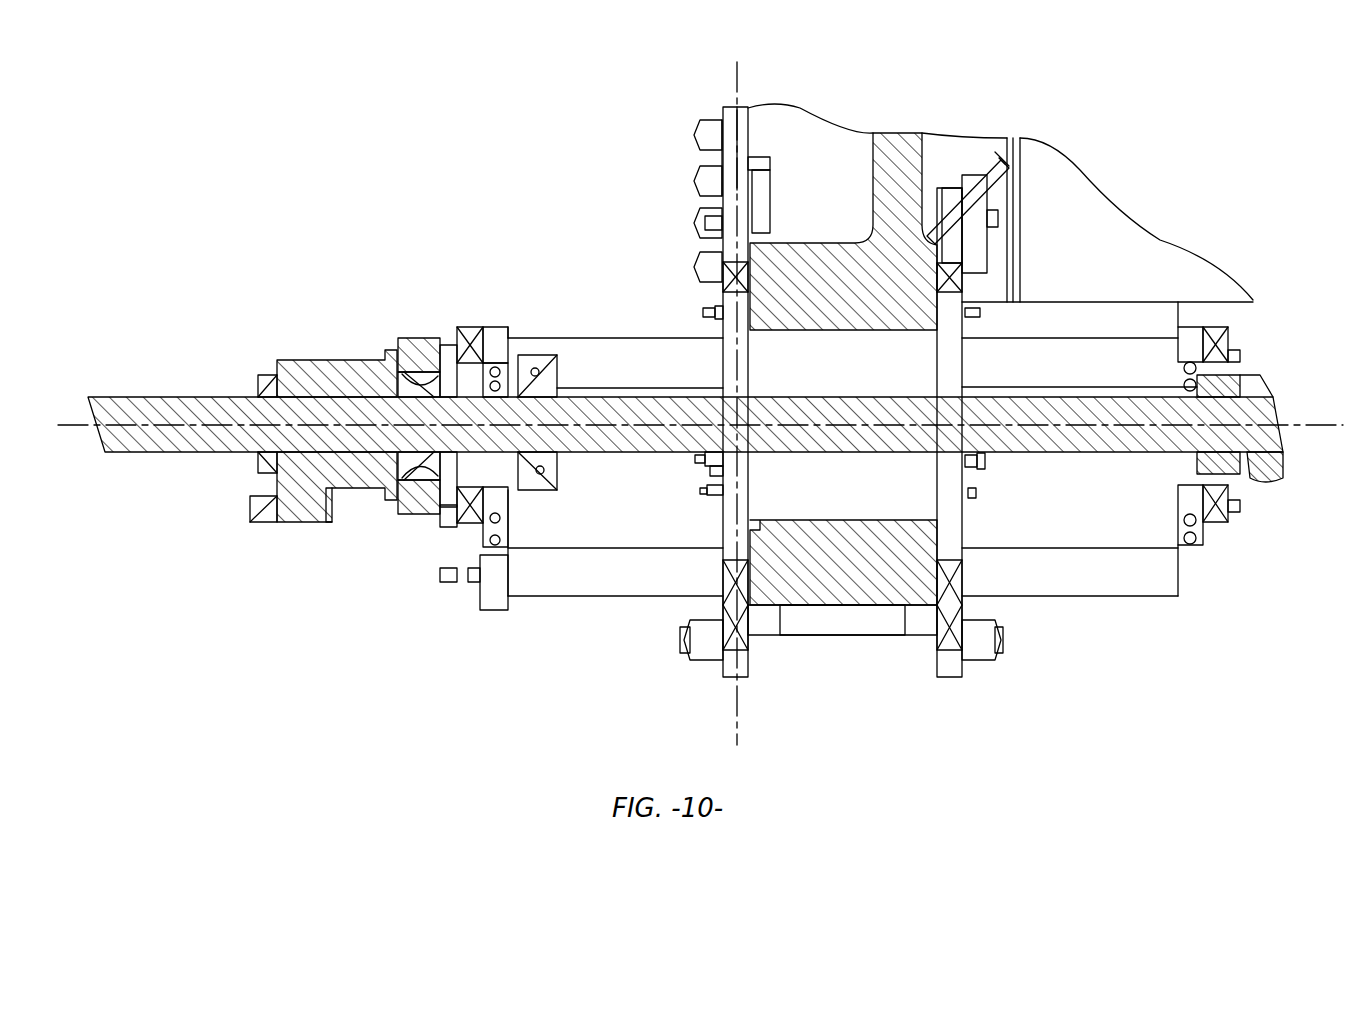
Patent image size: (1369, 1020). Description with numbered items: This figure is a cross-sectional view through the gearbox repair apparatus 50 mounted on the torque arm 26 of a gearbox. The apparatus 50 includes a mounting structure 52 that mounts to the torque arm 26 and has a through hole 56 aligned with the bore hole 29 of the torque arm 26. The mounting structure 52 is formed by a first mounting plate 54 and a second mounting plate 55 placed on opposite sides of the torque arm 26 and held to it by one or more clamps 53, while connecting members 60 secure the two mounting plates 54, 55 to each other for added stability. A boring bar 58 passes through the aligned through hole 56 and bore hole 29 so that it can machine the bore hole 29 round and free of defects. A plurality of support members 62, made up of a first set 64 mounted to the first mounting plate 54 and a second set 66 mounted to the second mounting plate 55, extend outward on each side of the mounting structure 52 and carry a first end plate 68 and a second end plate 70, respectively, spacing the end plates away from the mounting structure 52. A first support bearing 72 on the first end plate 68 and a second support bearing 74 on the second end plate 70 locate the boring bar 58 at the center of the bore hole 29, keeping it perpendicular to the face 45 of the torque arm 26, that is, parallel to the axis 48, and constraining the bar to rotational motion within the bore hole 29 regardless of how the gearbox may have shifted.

The torque arm 26 is at (895, 160).
The bore hole 29 is at (865, 497).
The face 45 is at (727, 538).
The axis 48 is at (1300, 420).
The gearbox repair apparatus 50 is at (1185, 165).
The mounting structure 52 is at (730, 190).
The clamps 53 is at (705, 312).
The first mounting plate 54 is at (730, 243).
The second mounting plate 55 is at (950, 238).
The through hole 56 is at (735, 485).
The boring bar 58 is at (185, 395).
The connecting members 60 is at (845, 640).
The support members 62 is at (626, 330).
The first set of support members 64 is at (590, 352).
The second set of support members 66 is at (1062, 350).
The first end plate 68 is at (497, 337).
The second end plate 70 is at (1178, 330).
The first support bearing 72 is at (462, 322).
The second support bearing 74 is at (1233, 340).